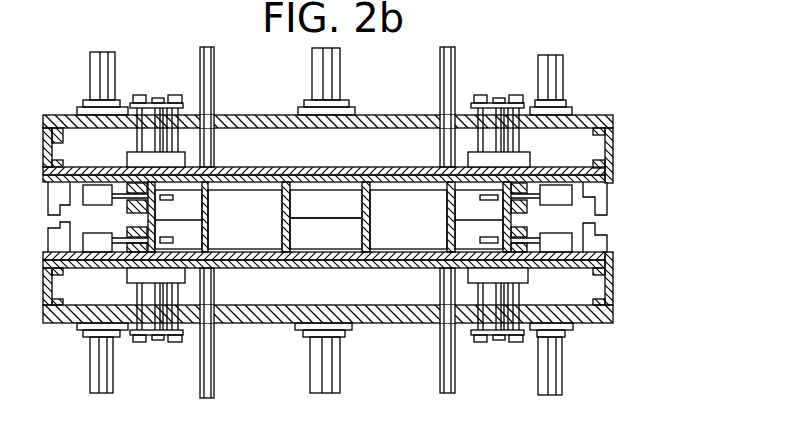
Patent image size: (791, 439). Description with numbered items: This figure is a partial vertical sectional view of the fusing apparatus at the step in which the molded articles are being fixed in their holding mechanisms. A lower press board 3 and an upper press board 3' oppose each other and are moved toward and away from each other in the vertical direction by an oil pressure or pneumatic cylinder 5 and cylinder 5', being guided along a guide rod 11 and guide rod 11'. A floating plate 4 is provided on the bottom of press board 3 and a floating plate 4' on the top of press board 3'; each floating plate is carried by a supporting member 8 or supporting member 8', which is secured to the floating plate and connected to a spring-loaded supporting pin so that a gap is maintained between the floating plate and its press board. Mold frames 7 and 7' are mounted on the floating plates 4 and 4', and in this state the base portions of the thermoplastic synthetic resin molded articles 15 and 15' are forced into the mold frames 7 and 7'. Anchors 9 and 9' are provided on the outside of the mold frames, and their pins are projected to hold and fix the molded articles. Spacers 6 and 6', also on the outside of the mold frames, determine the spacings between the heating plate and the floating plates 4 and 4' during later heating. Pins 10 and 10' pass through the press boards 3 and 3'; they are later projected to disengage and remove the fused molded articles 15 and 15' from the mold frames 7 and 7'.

The press board 3' is at (370, 146).
The floating plate 4' is at (374, 163).
The oil pressure cylinder 5' is at (348, 81).
The spacer 6' is at (624, 193).
The mold frame 7' is at (548, 212).
The supporting member 8' is at (520, 154).
The anchor 9' is at (603, 211).
The pin 10' is at (480, 102).
The guide rod 11' is at (579, 69).
The molded article 15' is at (323, 174).
The press board 3 is at (355, 309).
The floating plate 4 is at (352, 277).
The oil pressure cylinder 5 is at (337, 362).
The spacer 6 is at (621, 246).
The mold frame 7 is at (553, 270).
The supporting member 8 is at (470, 290).
The anchor 9 is at (549, 264).
The pin 10 is at (475, 330).
The guide rod 11 is at (574, 362).
The molded article 15 is at (323, 262).